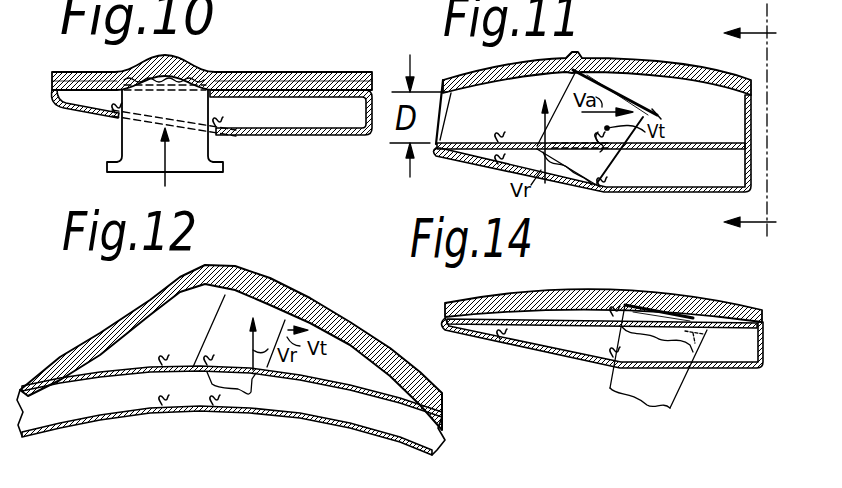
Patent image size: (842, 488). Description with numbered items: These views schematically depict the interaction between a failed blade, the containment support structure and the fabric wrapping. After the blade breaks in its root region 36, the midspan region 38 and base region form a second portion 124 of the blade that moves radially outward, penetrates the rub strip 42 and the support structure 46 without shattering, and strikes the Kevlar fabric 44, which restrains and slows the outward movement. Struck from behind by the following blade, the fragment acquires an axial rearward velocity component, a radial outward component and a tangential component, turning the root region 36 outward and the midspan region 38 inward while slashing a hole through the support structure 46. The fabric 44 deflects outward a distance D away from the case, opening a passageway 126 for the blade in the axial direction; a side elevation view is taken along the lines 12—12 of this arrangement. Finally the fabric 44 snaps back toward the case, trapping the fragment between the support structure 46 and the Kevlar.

In FIG. 10, the Kevlar fabric 44 is at (280, 73).
In FIG. 11, the Kevlar fabric 44 is at (674, 70).
In FIG. 10, the second portion of the blade 124 is at (137, 140).
In FIG. 11, the second portion of the blade 124 is at (580, 139).
In FIG. 12, the second portion of the blade 124 is at (210, 341).
In FIG. 14, the second portion of the blade 124 is at (670, 391).
In FIG. 11, the passageway 126 is at (511, 119).
In FIG. 12, the passageway 126 is at (197, 319).
In FIG. 10, the rub strip 42 is at (212, 126).
In FIG. 10, the support structure 46 is at (341, 132).
In FIG. 11, the midspan region 38 is at (658, 113).
In FIG. 11, the root region 36 is at (600, 173).
In FIG. 11, the section lines 12— 12 is at (733, 122).